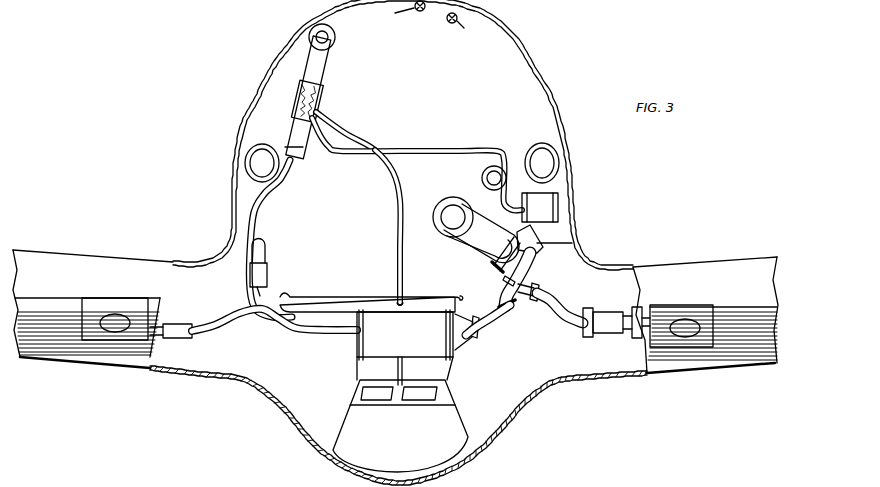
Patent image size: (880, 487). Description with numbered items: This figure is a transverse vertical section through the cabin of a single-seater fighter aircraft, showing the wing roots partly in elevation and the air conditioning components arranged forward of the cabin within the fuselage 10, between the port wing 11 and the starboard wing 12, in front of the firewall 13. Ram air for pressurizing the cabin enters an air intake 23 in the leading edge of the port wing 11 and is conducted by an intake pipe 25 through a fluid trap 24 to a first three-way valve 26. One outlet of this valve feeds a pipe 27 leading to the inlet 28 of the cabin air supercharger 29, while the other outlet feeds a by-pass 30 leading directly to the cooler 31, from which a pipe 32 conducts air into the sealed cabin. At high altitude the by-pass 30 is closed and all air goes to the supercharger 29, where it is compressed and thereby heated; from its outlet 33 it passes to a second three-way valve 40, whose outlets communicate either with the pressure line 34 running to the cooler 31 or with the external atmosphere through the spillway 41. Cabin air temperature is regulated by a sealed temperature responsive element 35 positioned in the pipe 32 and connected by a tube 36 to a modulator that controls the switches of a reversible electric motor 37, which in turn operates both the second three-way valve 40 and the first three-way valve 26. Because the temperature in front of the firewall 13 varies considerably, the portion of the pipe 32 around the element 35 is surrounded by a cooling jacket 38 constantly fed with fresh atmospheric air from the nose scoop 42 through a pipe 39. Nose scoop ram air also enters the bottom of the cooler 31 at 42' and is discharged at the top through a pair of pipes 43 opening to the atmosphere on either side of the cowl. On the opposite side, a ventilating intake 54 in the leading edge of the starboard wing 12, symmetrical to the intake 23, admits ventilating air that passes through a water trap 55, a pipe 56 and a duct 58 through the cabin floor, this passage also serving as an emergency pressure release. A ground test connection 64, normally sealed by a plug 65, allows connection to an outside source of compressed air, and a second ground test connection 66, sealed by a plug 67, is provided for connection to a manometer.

The fuselage 10 is at (262, 74).
The port wing 11 is at (712, 375).
The starboard wing 12 is at (102, 367).
The firewall 13 is at (364, 233).
The air intake 23 is at (681, 326).
The fluid trap 24 is at (610, 331).
The intake pipe 25 is at (554, 313).
The first three-way valve 26 is at (529, 282).
The pipe 27 is at (494, 291).
The inlet 28 is at (495, 262).
The cabin air supercharger 29 is at (476, 230).
The by-pass 30 is at (500, 294).
The cooler 31 is at (405, 335).
The pipe 32 is at (285, 186).
The outlet 33 is at (490, 185).
The pressure line 34 is at (490, 323).
The temperature responsive element 35 is at (318, 107).
The tube 36 is at (428, 149).
The reversible electric motor 37 is at (540, 207).
The cooling jacket 38 is at (293, 99).
The pipe 39 is at (396, 188).
The second three-way valve 40 is at (530, 239).
The spillway 41 is at (563, 237).
The nose scoop 42 is at (400, 414).
The cooler inlet 42' is at (399, 407).
The pipes 43 is at (294, 298).
The ventilating intake 54 is at (114, 321).
The water trap 55 is at (177, 338).
The pipe 56 is at (227, 331).
The duct 58 is at (264, 247).
The ground test connection 64 is at (418, 12).
The plug 65 is at (394, 13).
The ground test connection 66 is at (443, 29).
The plug 67 is at (469, 30).